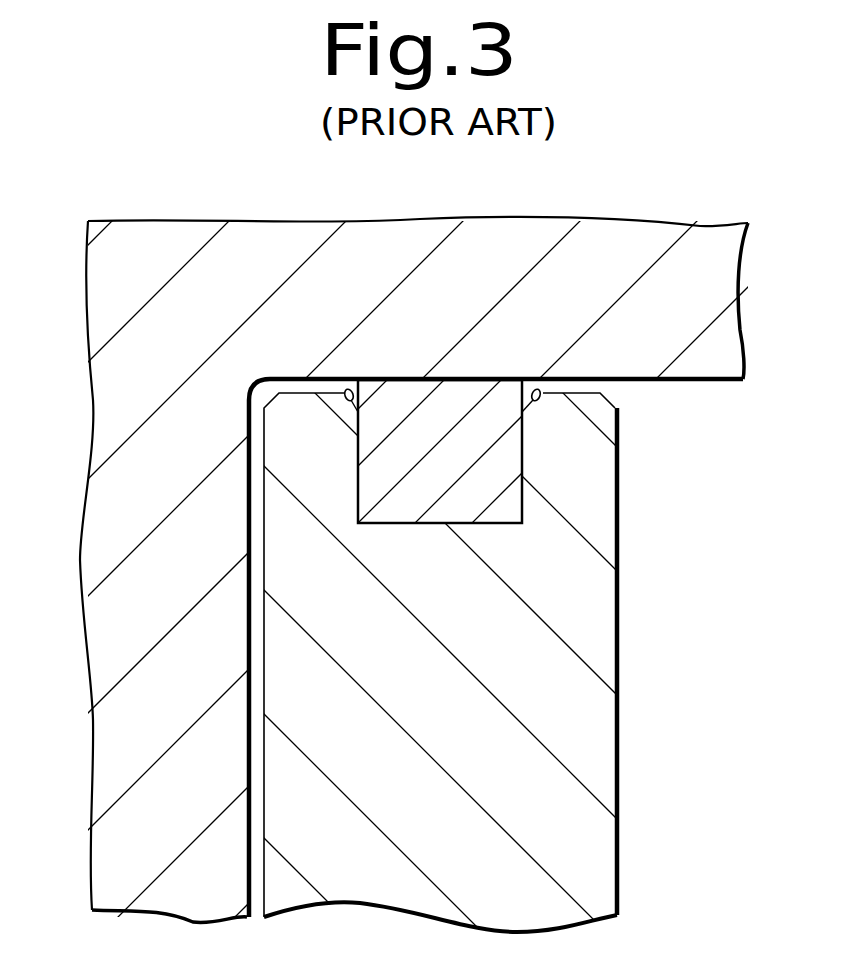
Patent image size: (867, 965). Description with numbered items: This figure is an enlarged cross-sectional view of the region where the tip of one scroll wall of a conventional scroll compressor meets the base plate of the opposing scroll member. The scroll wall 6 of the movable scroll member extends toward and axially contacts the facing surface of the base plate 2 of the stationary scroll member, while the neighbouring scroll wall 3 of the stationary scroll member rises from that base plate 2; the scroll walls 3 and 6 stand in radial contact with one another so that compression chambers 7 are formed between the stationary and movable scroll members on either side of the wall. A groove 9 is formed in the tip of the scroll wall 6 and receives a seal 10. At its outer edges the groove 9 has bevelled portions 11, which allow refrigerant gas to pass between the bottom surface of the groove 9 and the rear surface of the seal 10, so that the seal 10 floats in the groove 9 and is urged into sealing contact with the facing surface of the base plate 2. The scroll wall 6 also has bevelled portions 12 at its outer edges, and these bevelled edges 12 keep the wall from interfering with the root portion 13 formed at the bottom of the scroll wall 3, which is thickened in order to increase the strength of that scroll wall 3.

The base plate 2 is at (727, 370).
The scroll wall 3 is at (108, 656).
The scroll wall 6 is at (598, 713).
The compression chamber 7 is at (257, 697).
The groove 9 is at (510, 530).
The seal 10 is at (507, 472).
The bevelled portion 11 is at (345, 407).
The bevelled portion 12 is at (267, 388).
The root portion 13 is at (285, 378).